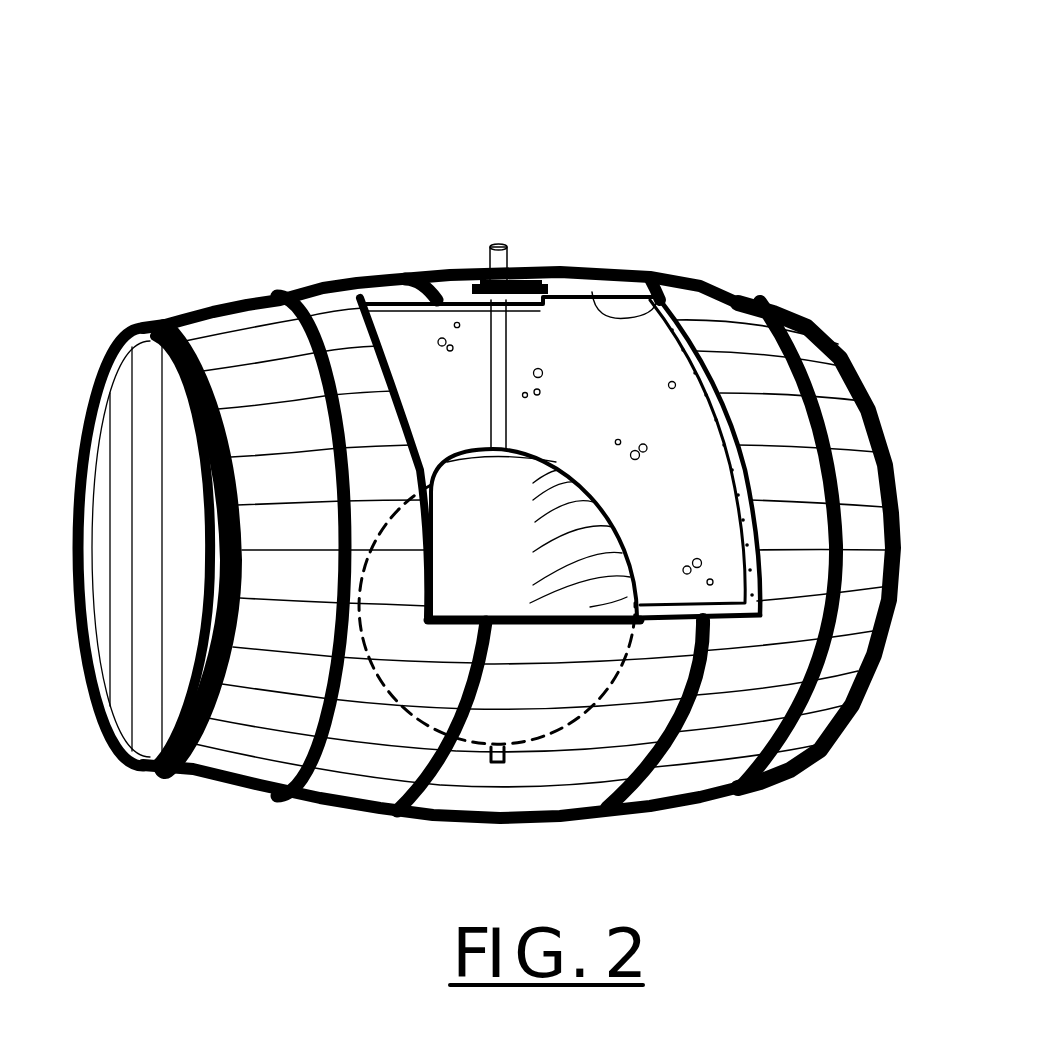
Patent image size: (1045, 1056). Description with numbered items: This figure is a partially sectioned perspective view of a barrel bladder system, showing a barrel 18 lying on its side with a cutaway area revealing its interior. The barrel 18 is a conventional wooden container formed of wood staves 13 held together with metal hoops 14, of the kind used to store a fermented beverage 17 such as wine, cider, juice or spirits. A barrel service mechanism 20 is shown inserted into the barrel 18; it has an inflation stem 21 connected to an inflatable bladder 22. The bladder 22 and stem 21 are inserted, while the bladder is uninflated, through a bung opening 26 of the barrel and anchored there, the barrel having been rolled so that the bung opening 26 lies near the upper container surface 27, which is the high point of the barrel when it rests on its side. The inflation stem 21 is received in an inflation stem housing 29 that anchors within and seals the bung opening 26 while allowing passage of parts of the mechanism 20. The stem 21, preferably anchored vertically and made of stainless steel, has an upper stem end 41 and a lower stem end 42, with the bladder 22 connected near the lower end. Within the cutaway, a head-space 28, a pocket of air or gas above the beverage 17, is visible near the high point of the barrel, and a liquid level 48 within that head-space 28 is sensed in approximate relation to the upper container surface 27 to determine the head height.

The wood staves 13 is at (210, 302).
The hoops 14 is at (273, 797).
The beverage 17 is at (693, 430).
The barrel 18 is at (322, 283).
The barrel service mechanism 20 is at (534, 130).
The inflation stem 21 is at (497, 367).
The inflatable bladder 22 is at (473, 477).
The bung opening 26 is at (477, 270).
The upper container surface 27 is at (667, 282).
The head-space 28 is at (481, 270).
The inflation stem housing 29 is at (530, 268).
The upper stem end 41 is at (504, 248).
The lower stem end 42 is at (490, 767).
The liquid level 48 is at (600, 273).